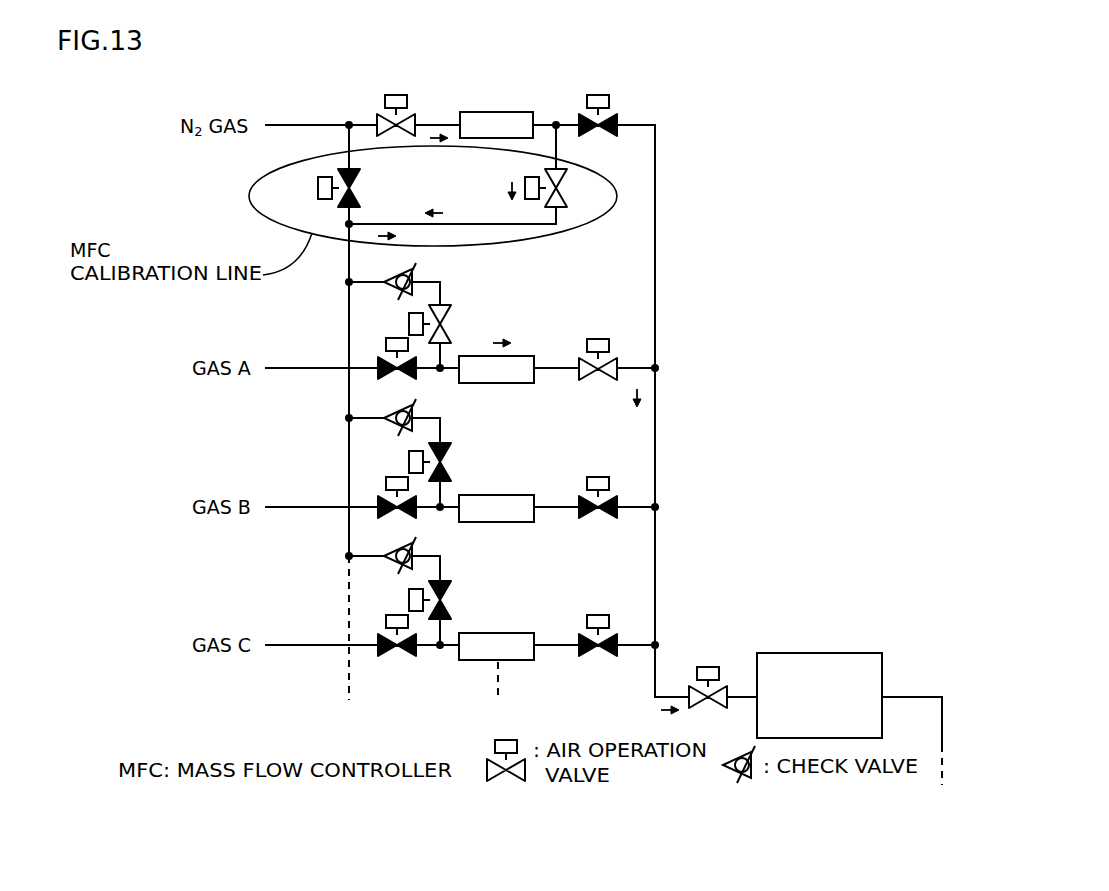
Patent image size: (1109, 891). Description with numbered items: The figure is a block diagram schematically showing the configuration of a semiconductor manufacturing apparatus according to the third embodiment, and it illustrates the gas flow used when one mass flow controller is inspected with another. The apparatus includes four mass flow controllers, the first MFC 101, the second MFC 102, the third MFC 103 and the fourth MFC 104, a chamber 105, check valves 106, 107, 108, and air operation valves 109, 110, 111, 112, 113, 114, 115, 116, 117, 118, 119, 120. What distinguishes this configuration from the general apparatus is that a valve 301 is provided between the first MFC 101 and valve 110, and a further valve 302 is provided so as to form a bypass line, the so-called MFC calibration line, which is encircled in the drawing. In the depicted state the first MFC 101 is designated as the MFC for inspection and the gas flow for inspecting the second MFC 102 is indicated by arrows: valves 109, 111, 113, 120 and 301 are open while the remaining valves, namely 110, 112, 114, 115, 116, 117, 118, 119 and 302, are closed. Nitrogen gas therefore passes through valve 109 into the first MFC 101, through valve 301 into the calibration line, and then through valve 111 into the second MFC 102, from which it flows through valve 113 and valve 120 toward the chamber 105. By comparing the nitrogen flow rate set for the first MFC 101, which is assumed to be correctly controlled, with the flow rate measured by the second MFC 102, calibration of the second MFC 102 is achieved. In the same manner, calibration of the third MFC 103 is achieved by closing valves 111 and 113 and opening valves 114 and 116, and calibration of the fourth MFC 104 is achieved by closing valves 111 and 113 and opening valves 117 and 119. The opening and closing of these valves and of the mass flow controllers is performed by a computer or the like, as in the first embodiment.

The mass flow controller MFC 1 101 is at (502, 112).
The mass flow controller MFC 2 102 is at (518, 357).
The mass flow controller MFC 3 103 is at (518, 496).
The mass flow controller MFC 4 104 is at (518, 634).
The chamber 105 is at (884, 668).
The check valve 106 is at (406, 274).
The check valve 107 is at (406, 412).
The check valve 108 is at (406, 550).
The air operation valve 109 is at (403, 96).
The air operation valve 110 is at (602, 95).
The air operation valve 111 is at (449, 313).
The air operation valve 112 is at (386, 345).
The air operation valve 113 is at (603, 339).
The air operation valve 114 is at (449, 451).
The air operation valve 115 is at (386, 484).
The air operation valve 116 is at (603, 477).
The air operation valve 117 is at (449, 589).
The air operation valve 118 is at (386, 622).
The air operation valve 119 is at (603, 615).
The air operation valve 120 is at (707, 665).
The valve 301 is at (529, 177).
The valve 302 is at (327, 200).